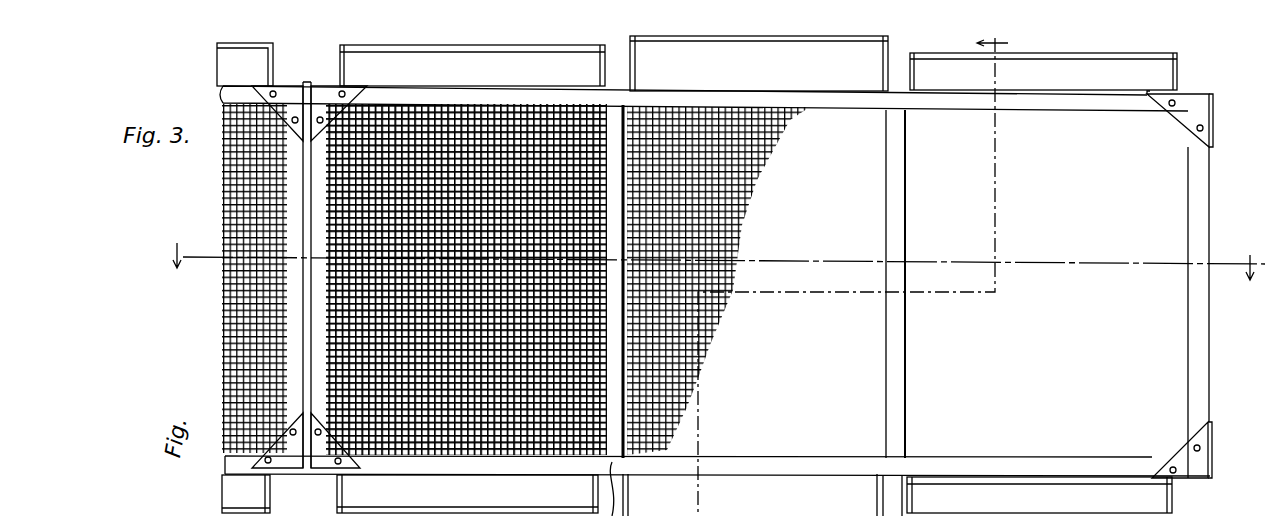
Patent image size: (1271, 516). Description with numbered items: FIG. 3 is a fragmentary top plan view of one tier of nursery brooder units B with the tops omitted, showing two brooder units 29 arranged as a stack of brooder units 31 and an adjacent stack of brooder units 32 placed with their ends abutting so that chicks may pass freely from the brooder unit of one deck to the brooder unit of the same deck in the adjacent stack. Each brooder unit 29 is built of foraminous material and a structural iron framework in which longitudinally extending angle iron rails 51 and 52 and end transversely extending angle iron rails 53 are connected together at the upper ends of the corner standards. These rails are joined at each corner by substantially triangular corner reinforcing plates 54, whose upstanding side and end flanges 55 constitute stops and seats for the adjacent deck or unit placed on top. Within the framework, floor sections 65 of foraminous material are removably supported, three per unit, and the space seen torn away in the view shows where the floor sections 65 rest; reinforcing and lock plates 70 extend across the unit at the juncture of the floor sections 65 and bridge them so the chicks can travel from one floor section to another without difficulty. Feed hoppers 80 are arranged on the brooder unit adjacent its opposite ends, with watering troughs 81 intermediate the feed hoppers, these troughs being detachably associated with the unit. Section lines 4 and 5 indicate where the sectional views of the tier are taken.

The brooder unit 29 is at (355, 370).
The stack of brooder units 31 is at (240, 183).
The stack of brooder units 32 is at (468, 135).
The longitudinally extending angle iron rail 51 is at (773, 460).
The longitudinally extending angle iron rail 52 is at (613, 95).
The end transversely extending angle iron rail 53 is at (319, 154).
The corner reinforcing plate 54 is at (322, 94).
The upstanding side and end flange 55 is at (298, 85).
The floor section 65 is at (872, 73).
The reinforcing and lock plate 70 is at (617, 196).
The feed hopper 80 is at (547, 61).
The watering trough 81 is at (803, 117).
The section line 4- 4 is at (716, 250).
The section line 5- 5 is at (861, 274).
The nursery brooder unit B is at (1153, 207).